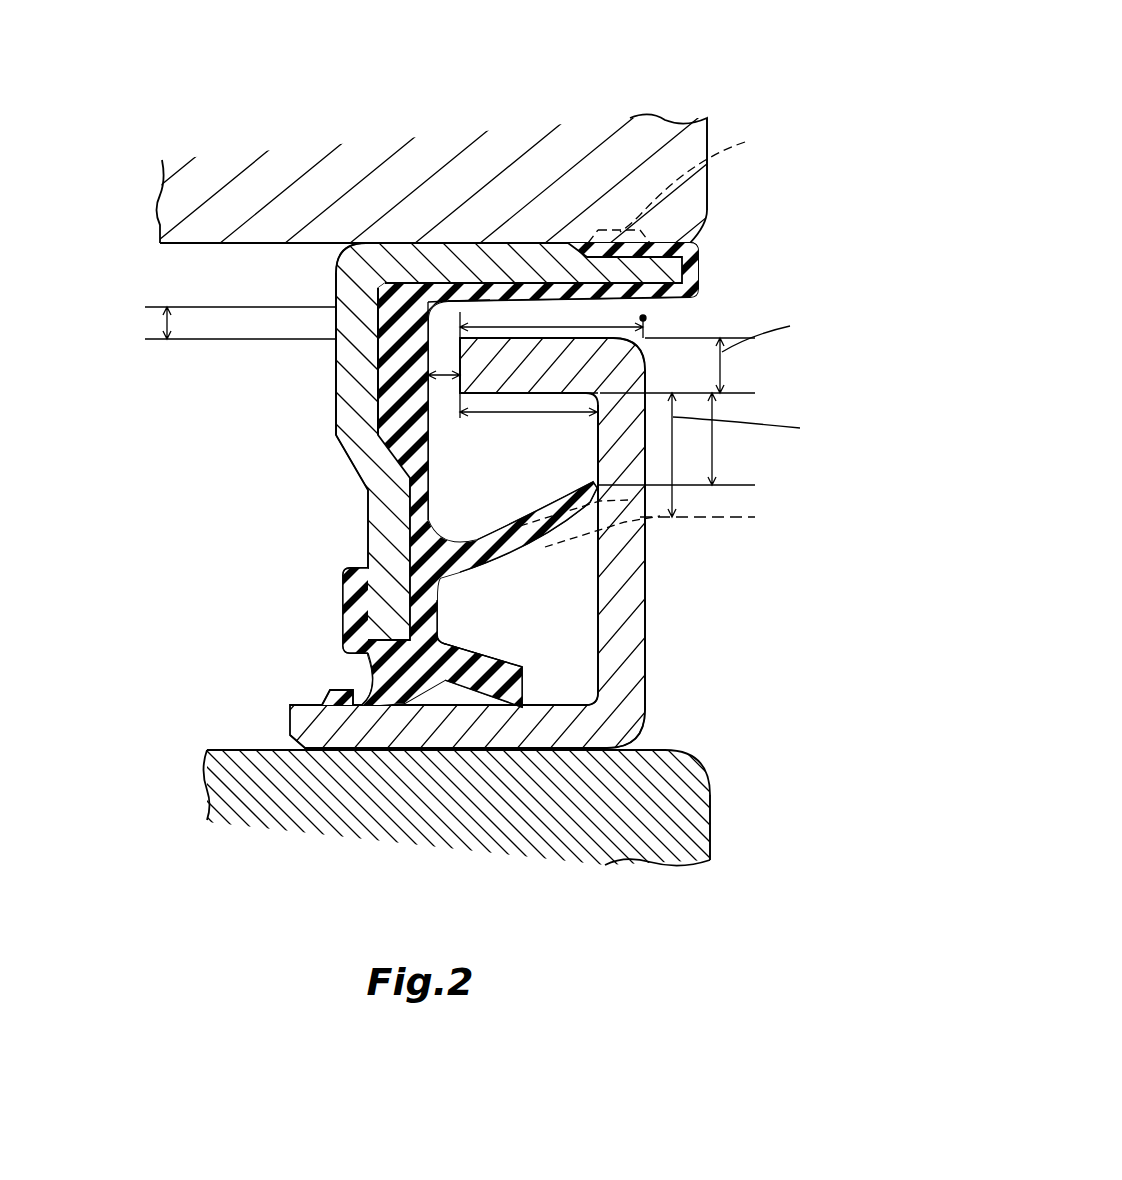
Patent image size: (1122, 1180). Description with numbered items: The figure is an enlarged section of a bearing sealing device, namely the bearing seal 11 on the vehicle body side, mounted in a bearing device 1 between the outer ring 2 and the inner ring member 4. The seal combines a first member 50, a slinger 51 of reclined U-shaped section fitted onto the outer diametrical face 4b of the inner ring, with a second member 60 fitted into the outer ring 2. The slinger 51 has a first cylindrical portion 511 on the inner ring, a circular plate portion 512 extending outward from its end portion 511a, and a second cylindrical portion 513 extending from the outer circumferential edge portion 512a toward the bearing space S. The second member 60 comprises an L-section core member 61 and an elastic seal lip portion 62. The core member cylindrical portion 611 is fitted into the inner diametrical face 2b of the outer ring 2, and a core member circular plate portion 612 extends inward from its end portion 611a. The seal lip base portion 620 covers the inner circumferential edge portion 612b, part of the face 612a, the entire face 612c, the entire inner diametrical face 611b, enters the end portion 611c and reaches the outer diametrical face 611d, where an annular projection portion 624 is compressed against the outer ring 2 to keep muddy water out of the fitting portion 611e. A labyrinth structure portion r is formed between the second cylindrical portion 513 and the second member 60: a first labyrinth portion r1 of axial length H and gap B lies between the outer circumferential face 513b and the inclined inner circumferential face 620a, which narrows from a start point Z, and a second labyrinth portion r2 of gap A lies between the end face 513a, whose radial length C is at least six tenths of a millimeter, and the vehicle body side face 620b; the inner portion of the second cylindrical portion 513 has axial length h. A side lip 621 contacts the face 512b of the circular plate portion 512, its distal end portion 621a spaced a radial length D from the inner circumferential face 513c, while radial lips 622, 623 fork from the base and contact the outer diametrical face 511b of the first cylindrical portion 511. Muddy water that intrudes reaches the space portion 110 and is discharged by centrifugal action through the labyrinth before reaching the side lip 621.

The bearing device 1 is at (757, 115).
The outer ring 2 is at (518, 316).
The inner diametrical face of the outer ring 2b is at (212, 240).
The inner ring member 4 is at (708, 858).
The outer diametrical face of the inner ring member 4b is at (265, 740).
The bearing seal 11 is at (822, 393).
The first member 50 is at (737, 497).
The slinger 51 is at (722, 600).
The first cylindrical portion 511 is at (600, 660).
The end portion of the first cylindrical portion 511a is at (620, 727).
The outer diametrical face of the first cylindrical portion 511b is at (605, 700).
The circular plate portion 512 is at (635, 612).
The outer circumferential edge portion of the circular plate portion 512a is at (625, 372).
The face of the circular plate portion on the bearing space side 512b is at (600, 570).
The second cylindrical portion 513 is at (660, 292).
The end face of the second cylindrical portion 513a is at (375, 350).
The outer circumferential face of the second cylindrical portion 513b is at (583, 345).
The inner circumferential face of the second cylindrical portion 513c is at (545, 398).
The second member 60 is at (561, 368).
The core member 61 is at (330, 418).
The seal lip portion 62 is at (376, 447).
The core member cylindrical portion 611 is at (400, 245).
The end portion of the core member cylindrical portion 611a is at (360, 268).
The inner diametrical face of the core member cylindrical portion 611b is at (388, 284).
The end portion of the core member cylindrical portion opposite the bearing space 611c is at (690, 272).
The outer diametrical face of the core member cylindrical portion 611d is at (665, 240).
The fitting portion 611e is at (418, 243).
The core member circular plate portion 612 is at (365, 330).
The face of the core member circular plate portion on the bearing space side 612a is at (355, 555).
The inner circumferential edge portion of the core member circular plate portion 612b is at (345, 655).
The face of the core member circular plate portion opposite the bearing space 612c is at (365, 510).
The seal lip base portion 620 is at (395, 385).
The inner circumferential face of the seal lip base portion 620a is at (540, 296).
The vehicle body side face of the seal lip base portion 620b is at (360, 487).
The side lip 621 is at (560, 517).
The distal end portion of the side lip 621a is at (648, 518).
The radial lip 622 is at (468, 653).
The radial lip 623 is at (330, 695).
The annular projection portion 624 is at (745, 142).
The space portion 110 is at (483, 503).
The gap of the second labyrinth portion A is at (447, 385).
The gap of the first labyrinth portion B is at (160, 322).
The diametrical direction length of the end face C is at (749, 345).
The diametrical direction length between the side lip distal end and the inner circu D is at (784, 455).
The shaft direction length of the first labyrinth portion H is at (551, 359).
The shaft direction length of the inner diametrical side portion of the second cylin h is at (528, 425).
The start point of the first labyrinth portion Z is at (650, 318).
The bearing space S is at (180, 530).
The labyrinth structure portion r is at (522, 90).
The first labyrinth portion r1 is at (495, 312).
The second labyrinth portion r2 is at (443, 330).